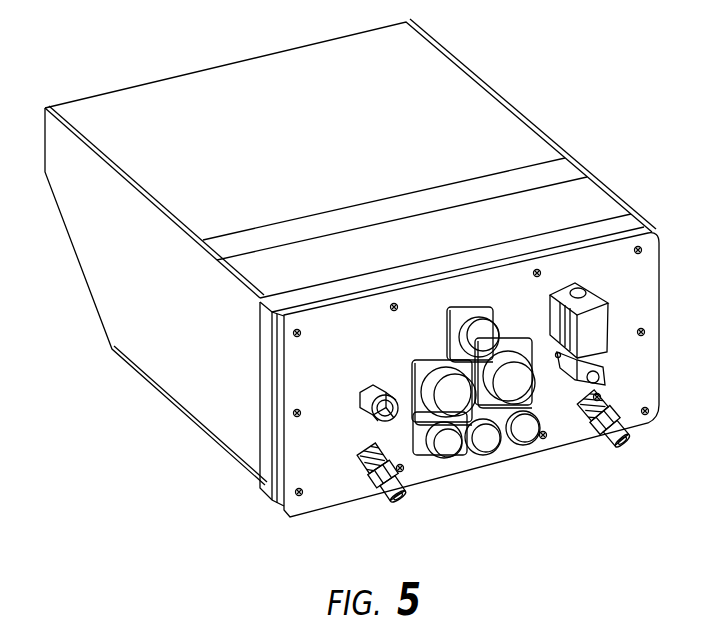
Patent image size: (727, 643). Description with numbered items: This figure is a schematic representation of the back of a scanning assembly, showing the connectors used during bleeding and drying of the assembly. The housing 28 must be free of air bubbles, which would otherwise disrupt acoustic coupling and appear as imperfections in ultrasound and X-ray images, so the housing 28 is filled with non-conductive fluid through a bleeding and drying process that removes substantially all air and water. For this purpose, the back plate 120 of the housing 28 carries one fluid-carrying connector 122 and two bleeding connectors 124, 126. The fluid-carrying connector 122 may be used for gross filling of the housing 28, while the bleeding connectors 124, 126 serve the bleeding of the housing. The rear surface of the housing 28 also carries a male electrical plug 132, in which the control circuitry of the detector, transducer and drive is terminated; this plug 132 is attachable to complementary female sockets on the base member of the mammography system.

The housing 28 is at (277, 273).
The back plate 120 is at (509, 293).
The fluid-carrying connector 122 is at (358, 414).
The bleeding connector 124 is at (407, 500).
The bleeding connector 126 is at (620, 447).
The male electrical plug 132 is at (505, 441).